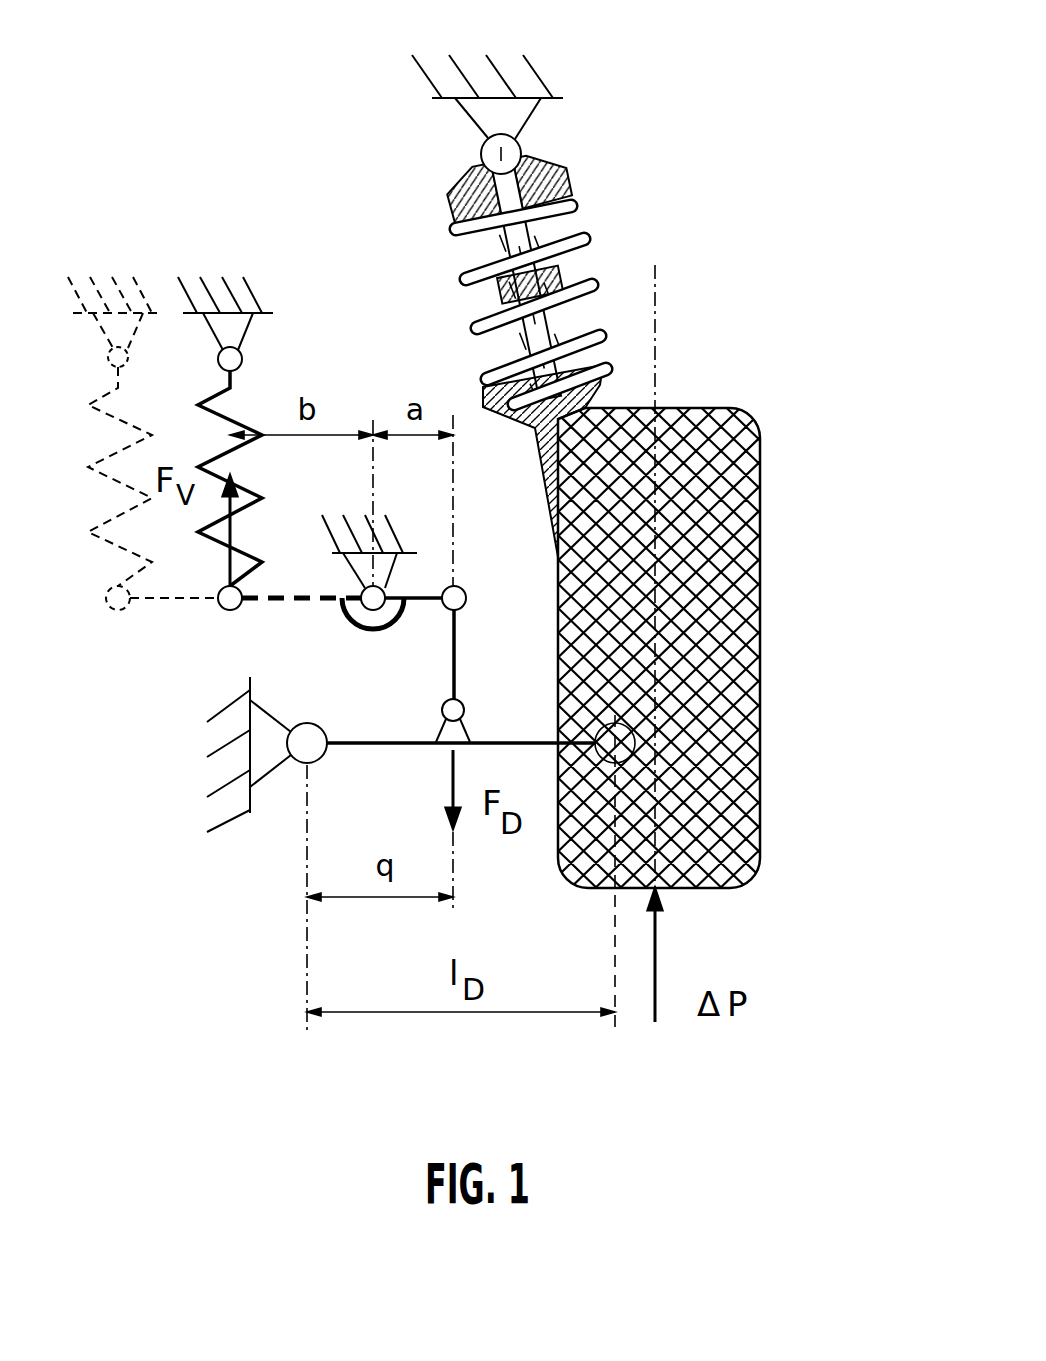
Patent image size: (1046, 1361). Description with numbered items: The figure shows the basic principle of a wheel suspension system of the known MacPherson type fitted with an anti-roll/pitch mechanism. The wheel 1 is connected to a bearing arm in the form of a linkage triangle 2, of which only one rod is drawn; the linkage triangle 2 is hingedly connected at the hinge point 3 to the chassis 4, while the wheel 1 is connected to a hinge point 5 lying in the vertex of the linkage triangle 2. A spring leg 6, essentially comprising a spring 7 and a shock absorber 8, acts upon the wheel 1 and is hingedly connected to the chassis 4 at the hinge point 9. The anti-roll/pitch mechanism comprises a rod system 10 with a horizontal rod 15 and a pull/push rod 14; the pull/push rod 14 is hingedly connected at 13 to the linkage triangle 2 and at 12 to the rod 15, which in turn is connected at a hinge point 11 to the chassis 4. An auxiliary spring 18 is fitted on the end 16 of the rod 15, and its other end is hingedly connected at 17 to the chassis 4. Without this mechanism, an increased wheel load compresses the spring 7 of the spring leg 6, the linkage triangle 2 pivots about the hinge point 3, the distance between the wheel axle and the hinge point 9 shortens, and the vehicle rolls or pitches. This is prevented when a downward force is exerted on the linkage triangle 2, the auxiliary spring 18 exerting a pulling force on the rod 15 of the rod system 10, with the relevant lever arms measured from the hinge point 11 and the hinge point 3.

The wheel 1 is at (730, 628).
The linkage triangle 2 is at (393, 745).
The hinge point 3 is at (299, 761).
The chassis 4 is at (540, 72).
The hinge point 5 is at (640, 740).
The spring leg 6 is at (582, 258).
The spring 7 is at (575, 232).
The shock absorber 8 is at (490, 250).
The hinge point 9 is at (512, 152).
The rod system 10 is at (268, 612).
The hinge point 11 is at (368, 608).
The hinge point 12 is at (466, 594).
The hinge point 13 is at (462, 706).
The pull/push rod 14 is at (456, 650).
The horizontal rod 15 is at (283, 595).
The end of the rod 16 is at (220, 607).
The hinge point 17 is at (242, 360).
The auxiliary spring 18 is at (225, 546).